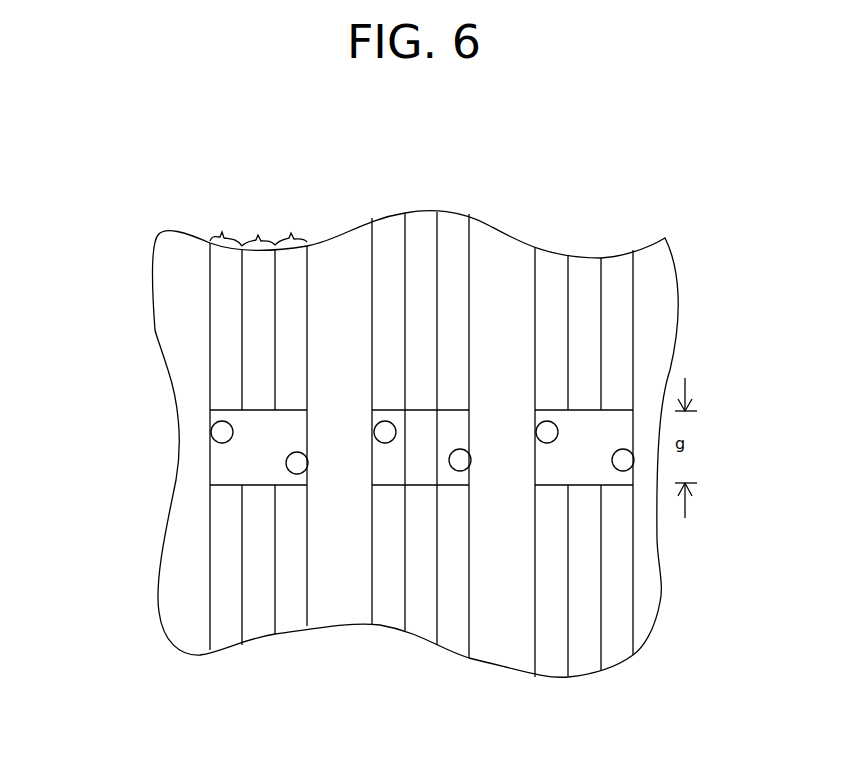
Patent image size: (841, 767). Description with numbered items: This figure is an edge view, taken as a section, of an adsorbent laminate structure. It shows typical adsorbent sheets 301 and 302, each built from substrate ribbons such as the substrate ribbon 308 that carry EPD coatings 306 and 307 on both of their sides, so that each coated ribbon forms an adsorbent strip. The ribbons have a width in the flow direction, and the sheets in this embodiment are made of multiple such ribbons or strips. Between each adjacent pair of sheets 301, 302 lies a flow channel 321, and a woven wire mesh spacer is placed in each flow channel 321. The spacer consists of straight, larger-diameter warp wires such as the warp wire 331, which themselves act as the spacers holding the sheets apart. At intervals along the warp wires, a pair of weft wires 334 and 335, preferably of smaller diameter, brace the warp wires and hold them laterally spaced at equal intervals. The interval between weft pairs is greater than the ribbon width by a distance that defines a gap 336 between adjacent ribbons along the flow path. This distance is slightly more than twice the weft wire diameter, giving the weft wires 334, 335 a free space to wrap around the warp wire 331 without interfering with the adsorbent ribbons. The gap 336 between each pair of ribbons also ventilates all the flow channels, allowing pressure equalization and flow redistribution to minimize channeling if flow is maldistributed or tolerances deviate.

The sheet 301 is at (222, 232).
The flow channel 321 is at (258, 234).
The sheet 302 is at (290, 232).
The warp wire 331 is at (332, 379).
The weft wire 334 is at (286, 463).
The weft wire 335 is at (387, 443).
The gap 336 is at (585, 443).
The EPD coating 306 is at (390, 599).
The substrate ribbon 308 is at (425, 619).
The EPD coating 307 is at (452, 626).